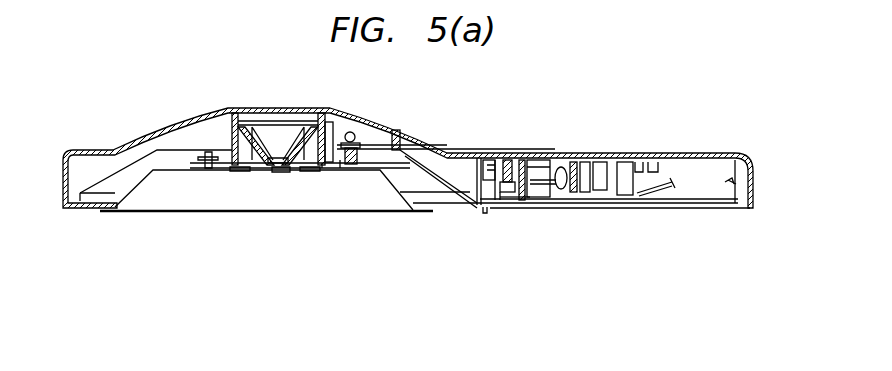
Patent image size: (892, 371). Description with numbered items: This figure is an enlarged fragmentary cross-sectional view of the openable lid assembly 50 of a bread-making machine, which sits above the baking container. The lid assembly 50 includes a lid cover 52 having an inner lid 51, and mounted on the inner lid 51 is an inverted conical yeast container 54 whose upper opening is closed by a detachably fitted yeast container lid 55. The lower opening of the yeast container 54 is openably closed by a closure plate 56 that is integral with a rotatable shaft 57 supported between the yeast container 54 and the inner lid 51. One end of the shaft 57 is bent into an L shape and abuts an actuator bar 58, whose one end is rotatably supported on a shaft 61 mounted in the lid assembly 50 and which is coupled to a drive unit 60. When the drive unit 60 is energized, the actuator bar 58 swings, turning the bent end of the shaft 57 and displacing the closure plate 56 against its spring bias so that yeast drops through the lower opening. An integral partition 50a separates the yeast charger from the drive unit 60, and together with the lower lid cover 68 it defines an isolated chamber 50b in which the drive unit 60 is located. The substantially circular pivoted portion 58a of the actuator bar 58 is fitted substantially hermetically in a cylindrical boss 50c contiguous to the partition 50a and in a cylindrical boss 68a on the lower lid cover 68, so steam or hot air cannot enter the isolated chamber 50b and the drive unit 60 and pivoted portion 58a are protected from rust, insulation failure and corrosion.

The lid assembly 50 is at (437, 150).
The partition 50a is at (495, 158).
The isolated chamber 50b is at (552, 194).
The cylindrical boss 50c is at (548, 158).
The inner lid 51 is at (390, 182).
The lid cover 52 is at (148, 150).
The yeast container 54 is at (265, 138).
The yeast container lid 55 is at (290, 110).
The closure plate 56 is at (283, 172).
The rotatable shaft 57 is at (332, 169).
The actuator bar 58 is at (373, 142).
The pivoted portion 58a is at (502, 194).
The drive unit 60 is at (622, 167).
The shaft 61 is at (520, 160).
The lower lid cover 68 is at (623, 204).
The cylindrical boss 68a is at (527, 202).